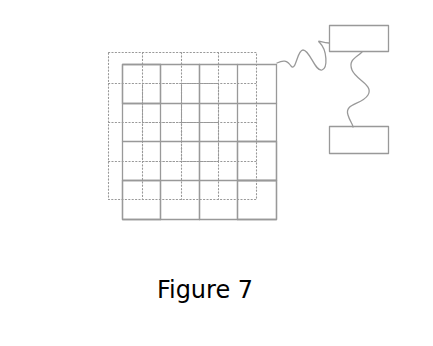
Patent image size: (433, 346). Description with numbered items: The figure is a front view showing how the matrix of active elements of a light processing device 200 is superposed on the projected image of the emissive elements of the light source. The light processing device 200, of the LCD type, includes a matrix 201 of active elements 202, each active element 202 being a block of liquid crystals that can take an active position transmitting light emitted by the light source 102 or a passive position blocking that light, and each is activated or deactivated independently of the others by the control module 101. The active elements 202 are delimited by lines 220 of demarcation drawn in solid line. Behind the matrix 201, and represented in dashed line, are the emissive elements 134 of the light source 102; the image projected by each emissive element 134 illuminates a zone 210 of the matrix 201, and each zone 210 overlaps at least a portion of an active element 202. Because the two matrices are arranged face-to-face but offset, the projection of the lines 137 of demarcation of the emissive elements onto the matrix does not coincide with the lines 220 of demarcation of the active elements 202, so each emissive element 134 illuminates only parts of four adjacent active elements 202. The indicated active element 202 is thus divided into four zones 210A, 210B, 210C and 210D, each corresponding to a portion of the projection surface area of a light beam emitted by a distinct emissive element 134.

The light processing device 200 is at (152, 64).
The matrix of active elements 201 is at (130, 97).
The active element 202 is at (194, 102).
The emissive element 134 is at (112, 170).
The lines of demarcation of the emissive elements 137 is at (135, 198).
The zone 210 is at (242, 173).
The zone 210A is at (162, 103).
The zone 210B is at (200, 103).
The zone 210C is at (162, 142).
The zone 210D is at (200, 142).
The lines of demarcation 220 is at (250, 220).
The control module 101 is at (333, 48).
The light source 102 is at (359, 103).